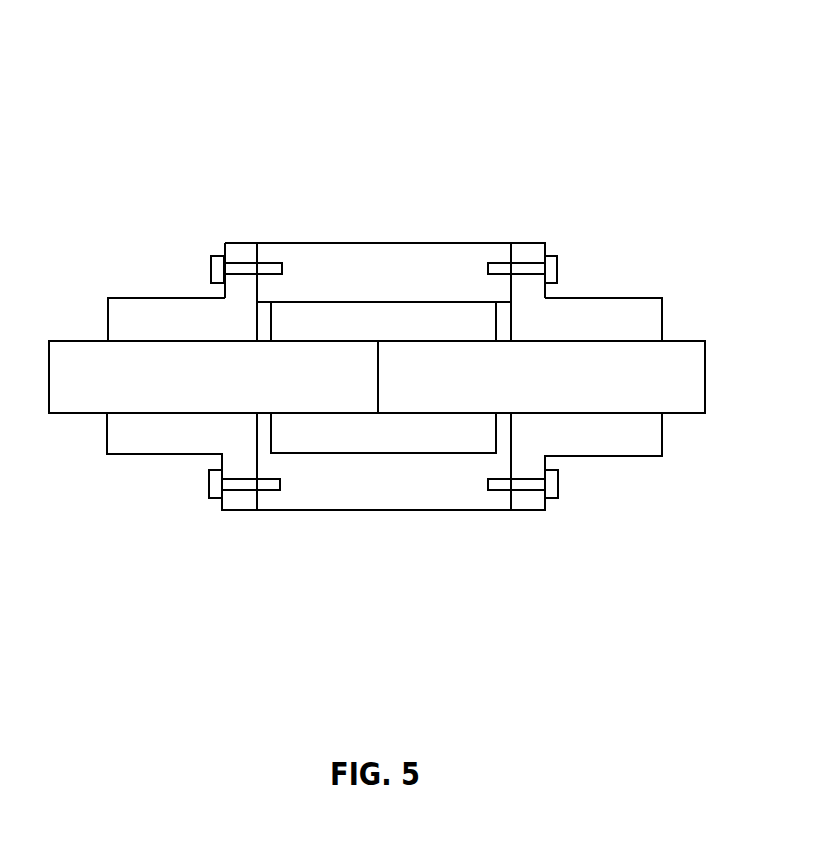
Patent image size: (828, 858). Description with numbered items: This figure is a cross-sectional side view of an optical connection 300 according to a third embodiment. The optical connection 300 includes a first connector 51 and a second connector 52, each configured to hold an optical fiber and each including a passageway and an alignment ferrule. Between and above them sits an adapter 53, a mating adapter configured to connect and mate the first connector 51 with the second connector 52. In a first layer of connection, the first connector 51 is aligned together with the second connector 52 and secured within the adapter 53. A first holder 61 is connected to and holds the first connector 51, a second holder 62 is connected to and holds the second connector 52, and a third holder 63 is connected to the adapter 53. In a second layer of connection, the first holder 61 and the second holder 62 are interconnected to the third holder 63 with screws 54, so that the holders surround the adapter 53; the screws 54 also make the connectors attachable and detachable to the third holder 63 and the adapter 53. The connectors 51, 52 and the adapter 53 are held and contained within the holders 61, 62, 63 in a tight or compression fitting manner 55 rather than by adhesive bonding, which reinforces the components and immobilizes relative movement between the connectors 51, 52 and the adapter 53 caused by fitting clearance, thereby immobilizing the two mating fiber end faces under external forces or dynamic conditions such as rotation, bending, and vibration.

The optical connection 300 is at (378, 86).
The first connector 51 is at (213, 377).
The second connector 52 is at (541, 377).
The adapter 53 is at (383, 377).
The screw 54 is at (204, 263).
The tight or compression fitting manner 55 is at (150, 420).
The first holder 61 is at (242, 404).
The second holder 62 is at (520, 404).
The third holder 63 is at (385, 292).